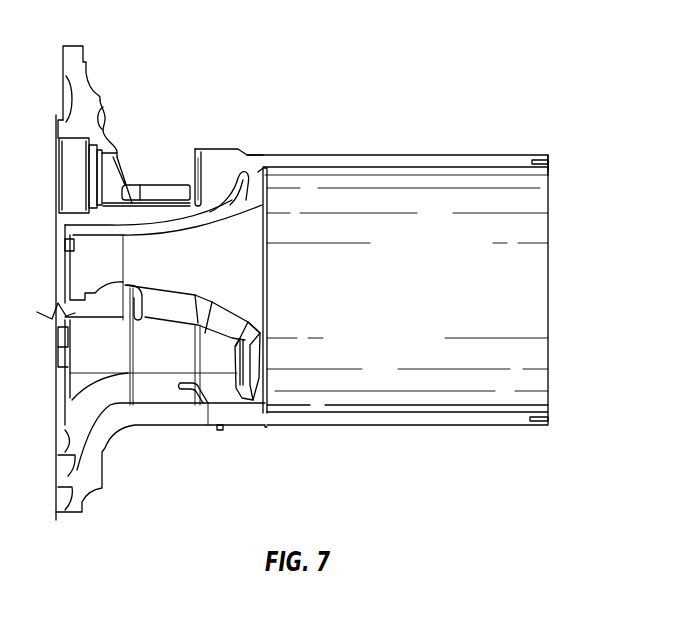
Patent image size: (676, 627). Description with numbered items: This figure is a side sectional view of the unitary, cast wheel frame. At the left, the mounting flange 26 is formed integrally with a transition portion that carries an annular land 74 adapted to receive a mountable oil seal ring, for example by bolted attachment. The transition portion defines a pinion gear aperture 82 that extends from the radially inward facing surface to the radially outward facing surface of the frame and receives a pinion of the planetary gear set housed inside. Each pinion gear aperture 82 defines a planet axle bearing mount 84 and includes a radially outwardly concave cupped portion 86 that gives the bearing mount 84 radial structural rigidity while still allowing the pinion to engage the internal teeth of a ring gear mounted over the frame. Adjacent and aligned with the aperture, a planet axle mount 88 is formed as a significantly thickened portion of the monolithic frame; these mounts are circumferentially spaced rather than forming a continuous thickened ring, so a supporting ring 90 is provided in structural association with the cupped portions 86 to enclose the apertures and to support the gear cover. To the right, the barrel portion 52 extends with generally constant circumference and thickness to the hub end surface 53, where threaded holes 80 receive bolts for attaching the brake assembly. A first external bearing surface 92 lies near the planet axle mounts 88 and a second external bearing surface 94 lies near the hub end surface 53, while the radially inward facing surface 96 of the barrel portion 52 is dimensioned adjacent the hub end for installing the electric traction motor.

The mounting flange 26 is at (85, 63).
The annular land 74 is at (100, 99).
The pinion gear aperture 82 is at (146, 158).
The planet axle bearing mount 84 is at (78, 144).
The cupped portion 86 is at (137, 203).
The planet axle mount 88 is at (217, 148).
The supporting ring 90 is at (67, 256).
The first external bearing surface 92 is at (341, 155).
The barrel portion 52 is at (400, 155).
The radially inward facing surface 96 is at (463, 178).
The second external bearing surface 94 is at (527, 155).
The hub end surface 53 is at (550, 158).
The threaded hole 80 is at (550, 162).